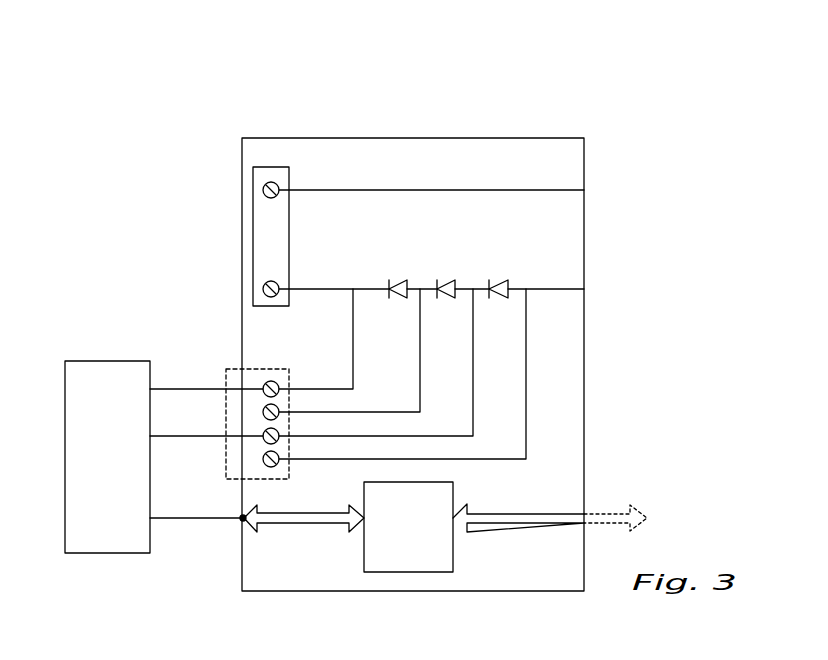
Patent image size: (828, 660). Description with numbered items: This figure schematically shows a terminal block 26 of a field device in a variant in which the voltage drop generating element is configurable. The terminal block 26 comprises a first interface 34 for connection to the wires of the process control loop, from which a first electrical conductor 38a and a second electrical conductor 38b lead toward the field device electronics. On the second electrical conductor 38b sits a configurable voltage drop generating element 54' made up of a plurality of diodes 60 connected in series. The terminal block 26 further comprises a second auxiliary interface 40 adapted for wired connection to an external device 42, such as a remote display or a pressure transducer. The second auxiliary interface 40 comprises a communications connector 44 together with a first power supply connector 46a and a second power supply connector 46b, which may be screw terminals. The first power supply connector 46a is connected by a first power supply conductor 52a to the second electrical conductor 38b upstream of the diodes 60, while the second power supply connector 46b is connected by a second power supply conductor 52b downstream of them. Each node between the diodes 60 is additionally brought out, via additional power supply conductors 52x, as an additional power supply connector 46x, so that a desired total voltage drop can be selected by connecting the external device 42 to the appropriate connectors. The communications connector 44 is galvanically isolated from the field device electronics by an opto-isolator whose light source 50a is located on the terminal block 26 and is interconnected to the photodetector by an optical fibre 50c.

The terminal block 26 is at (278, 138).
The first interface 34 is at (253, 197).
The first electrical conductor 38a is at (328, 190).
The second electrical conductor 38b is at (553, 289).
The configurable voltage drop generating element 54' is at (447, 247).
The diodes 60 is at (502, 282).
The second power supply conductor 52b is at (353, 322).
The additional power supply conductors 52x is at (428, 370).
The first power supply conductor 52a is at (526, 443).
The external device 42 is at (80, 427).
The second auxiliary interface 40 is at (248, 432).
The second power supply connector 46b is at (263, 385).
The additional power supply connector 46x is at (263, 414).
The first power supply connector 46a is at (263, 462).
The communications connector 44 is at (243, 519).
The light source 50a is at (392, 520).
The optical fibre 50c is at (505, 519).